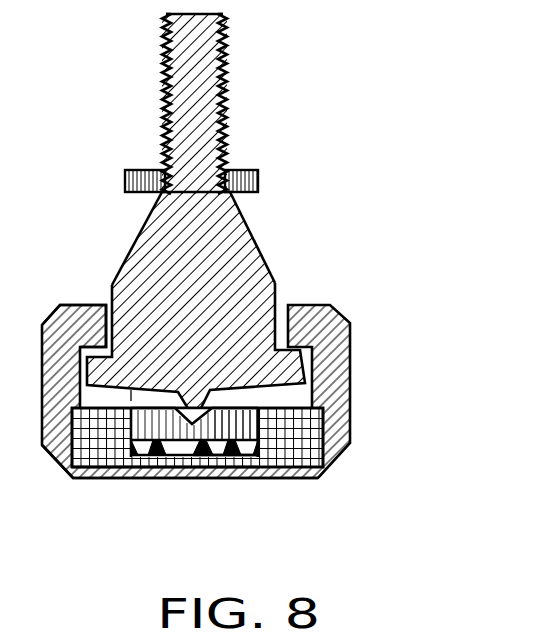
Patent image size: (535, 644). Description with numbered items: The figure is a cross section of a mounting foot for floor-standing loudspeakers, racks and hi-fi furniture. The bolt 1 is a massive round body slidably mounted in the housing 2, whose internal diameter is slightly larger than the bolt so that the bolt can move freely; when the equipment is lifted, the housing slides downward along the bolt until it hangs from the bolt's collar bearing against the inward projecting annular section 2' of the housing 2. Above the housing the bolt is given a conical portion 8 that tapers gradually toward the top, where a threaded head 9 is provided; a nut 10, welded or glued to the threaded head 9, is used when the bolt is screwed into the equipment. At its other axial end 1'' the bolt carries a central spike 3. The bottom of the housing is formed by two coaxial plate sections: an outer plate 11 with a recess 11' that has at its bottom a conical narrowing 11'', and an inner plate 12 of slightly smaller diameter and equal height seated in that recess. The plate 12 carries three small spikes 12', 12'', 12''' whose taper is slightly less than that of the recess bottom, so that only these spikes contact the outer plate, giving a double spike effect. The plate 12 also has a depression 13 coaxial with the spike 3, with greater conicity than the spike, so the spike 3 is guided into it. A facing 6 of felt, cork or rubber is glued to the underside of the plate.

The threaded head 9 is at (198, 72).
The nut 10 is at (258, 170).
The conical portion 8 is at (251, 236).
The bolt 1 is at (248, 306).
The housing 2 is at (244, 388).
The annular section 2' is at (66, 272).
The axial end 1'' is at (172, 490).
The facing 6 is at (131, 392).
The spike 3 is at (163, 443).
The depression 13 is at (190, 425).
The plate 12 is at (214, 469).
The small spike 12' is at (107, 516).
The small spike 12'' is at (226, 513).
The small spike 12''' is at (194, 510).
The plate 11 is at (229, 418).
The recess 11' is at (254, 476).
The conical narrowing 11'' is at (303, 494).